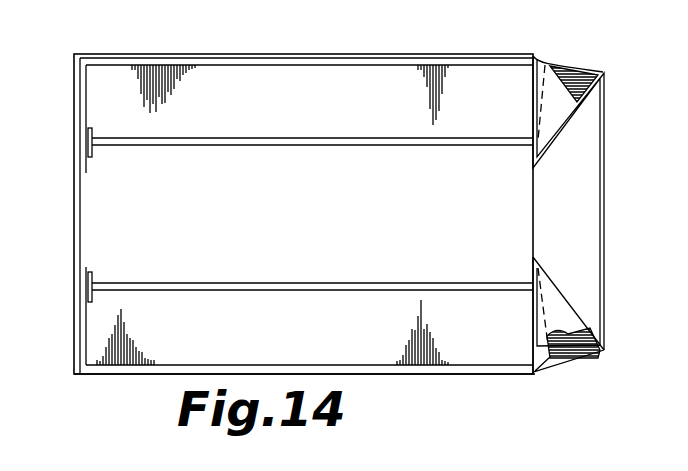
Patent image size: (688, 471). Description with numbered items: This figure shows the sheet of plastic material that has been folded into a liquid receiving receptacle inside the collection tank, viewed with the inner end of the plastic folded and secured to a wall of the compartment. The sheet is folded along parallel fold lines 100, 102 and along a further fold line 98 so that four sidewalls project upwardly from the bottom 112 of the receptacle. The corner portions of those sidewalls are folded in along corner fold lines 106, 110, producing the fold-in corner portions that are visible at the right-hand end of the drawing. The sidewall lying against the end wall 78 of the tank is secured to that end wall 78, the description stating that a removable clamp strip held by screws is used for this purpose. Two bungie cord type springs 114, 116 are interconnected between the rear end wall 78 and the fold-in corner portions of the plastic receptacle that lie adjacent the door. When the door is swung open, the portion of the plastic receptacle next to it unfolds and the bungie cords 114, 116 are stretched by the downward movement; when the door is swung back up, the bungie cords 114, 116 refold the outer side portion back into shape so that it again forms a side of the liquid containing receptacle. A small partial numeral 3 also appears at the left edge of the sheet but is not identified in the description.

The end wall 78 is at (73, 214).
The partial numeral (cut off) 3 is at (4, 290).
The fold line 98 is at (500, 54).
The fold line 100 is at (603, 71).
The fold line 102 is at (592, 360).
The corner fold line 106 is at (583, 69).
The corner fold line 110 is at (566, 358).
The bottom 112 is at (162, 257).
The bungie cord spring 114 is at (341, 282).
The bungie cord spring 116 is at (331, 147).